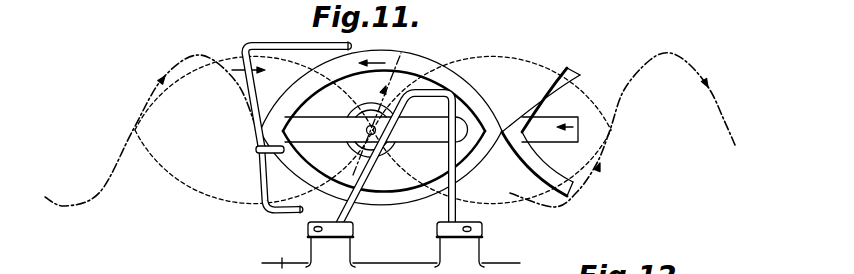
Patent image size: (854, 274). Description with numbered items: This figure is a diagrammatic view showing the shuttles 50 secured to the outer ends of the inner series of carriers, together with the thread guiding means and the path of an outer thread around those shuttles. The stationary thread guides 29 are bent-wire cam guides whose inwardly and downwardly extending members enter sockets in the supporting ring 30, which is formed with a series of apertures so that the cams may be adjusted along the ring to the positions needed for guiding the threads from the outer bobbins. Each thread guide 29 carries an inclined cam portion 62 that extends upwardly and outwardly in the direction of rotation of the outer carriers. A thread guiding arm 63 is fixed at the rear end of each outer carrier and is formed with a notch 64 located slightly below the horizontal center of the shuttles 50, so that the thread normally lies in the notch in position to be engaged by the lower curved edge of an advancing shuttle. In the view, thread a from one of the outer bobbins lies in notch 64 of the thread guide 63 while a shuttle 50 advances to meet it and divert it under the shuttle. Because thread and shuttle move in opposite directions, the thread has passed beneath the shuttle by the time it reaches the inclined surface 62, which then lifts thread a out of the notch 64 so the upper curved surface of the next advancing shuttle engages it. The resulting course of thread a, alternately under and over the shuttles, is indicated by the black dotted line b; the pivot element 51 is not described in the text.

The stationary thread guide 29 is at (358, 187).
The supporting ring 30 is at (391, 245).
The shuttle 50 is at (172, 177).
The pivot hub 51 is at (367, 101).
The inclined cam portion 62 is at (353, 165).
The thread guiding arm 63 is at (263, 42).
The notch 64 is at (258, 143).
The thread a is at (259, 171).
The black dotted line b is at (138, 97).